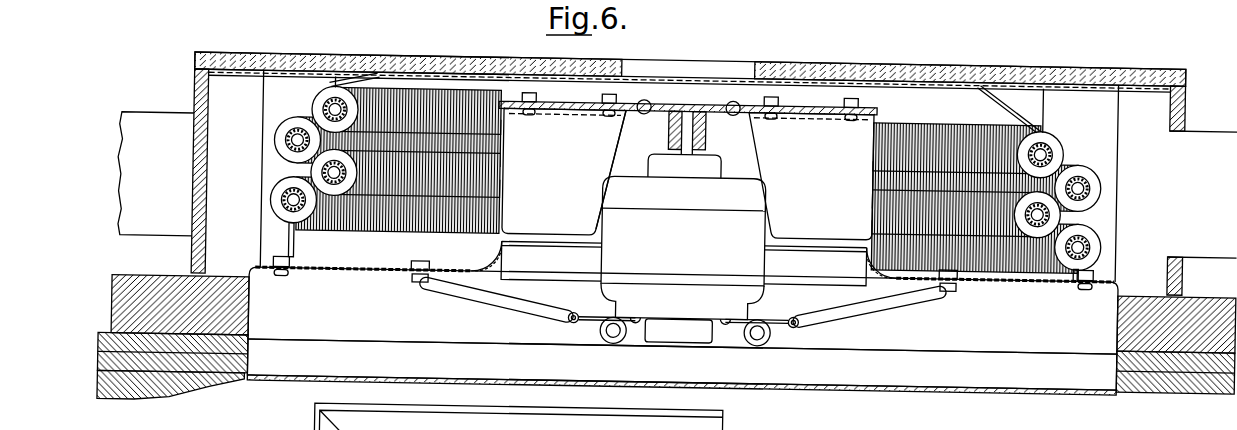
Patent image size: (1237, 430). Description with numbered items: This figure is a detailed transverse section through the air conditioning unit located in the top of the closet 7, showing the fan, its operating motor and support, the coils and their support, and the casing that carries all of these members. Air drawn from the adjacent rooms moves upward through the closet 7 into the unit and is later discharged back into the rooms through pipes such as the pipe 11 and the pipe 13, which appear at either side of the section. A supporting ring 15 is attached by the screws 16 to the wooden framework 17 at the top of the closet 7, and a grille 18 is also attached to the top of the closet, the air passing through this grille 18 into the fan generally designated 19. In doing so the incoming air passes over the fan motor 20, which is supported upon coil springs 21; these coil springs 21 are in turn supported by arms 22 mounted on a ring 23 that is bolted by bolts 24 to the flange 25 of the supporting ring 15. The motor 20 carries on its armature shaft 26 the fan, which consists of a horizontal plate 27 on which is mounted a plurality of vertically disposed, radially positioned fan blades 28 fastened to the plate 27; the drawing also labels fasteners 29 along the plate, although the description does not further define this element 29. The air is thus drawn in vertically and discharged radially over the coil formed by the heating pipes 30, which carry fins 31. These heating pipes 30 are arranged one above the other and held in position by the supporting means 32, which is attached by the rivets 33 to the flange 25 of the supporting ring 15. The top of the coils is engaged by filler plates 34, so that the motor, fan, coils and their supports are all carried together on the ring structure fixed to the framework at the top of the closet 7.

The closet 7 is at (196, 385).
The pipe 11 is at (1212, 183).
The pipe 13 is at (144, 190).
The supporting ring 15 is at (319, 320).
The screws 16 is at (268, 298).
The wooden framework 17 is at (176, 274).
The grille 18 is at (829, 381).
The fan 19 is at (625, 142).
The fan motor 20 is at (678, 264).
The coil springs 21 is at (613, 338).
The arms 22 is at (495, 298).
The ring 23 is at (470, 265).
The bolts 24 is at (412, 280).
The flange 25 is at (330, 270).
The armature shaft 26 is at (686, 98).
The horizontal plate 27 is at (800, 96).
The fan blades 28 is at (558, 171).
The bolt 29 is at (607, 92).
The heating pipes 30 is at (336, 107).
The fins 31 is at (299, 116).
The supporting means 32 is at (292, 240).
The rivets 33 is at (277, 257).
The filler plates 34 is at (356, 70).